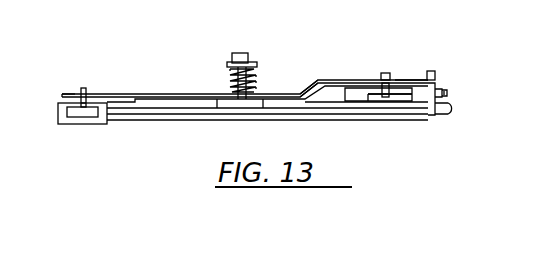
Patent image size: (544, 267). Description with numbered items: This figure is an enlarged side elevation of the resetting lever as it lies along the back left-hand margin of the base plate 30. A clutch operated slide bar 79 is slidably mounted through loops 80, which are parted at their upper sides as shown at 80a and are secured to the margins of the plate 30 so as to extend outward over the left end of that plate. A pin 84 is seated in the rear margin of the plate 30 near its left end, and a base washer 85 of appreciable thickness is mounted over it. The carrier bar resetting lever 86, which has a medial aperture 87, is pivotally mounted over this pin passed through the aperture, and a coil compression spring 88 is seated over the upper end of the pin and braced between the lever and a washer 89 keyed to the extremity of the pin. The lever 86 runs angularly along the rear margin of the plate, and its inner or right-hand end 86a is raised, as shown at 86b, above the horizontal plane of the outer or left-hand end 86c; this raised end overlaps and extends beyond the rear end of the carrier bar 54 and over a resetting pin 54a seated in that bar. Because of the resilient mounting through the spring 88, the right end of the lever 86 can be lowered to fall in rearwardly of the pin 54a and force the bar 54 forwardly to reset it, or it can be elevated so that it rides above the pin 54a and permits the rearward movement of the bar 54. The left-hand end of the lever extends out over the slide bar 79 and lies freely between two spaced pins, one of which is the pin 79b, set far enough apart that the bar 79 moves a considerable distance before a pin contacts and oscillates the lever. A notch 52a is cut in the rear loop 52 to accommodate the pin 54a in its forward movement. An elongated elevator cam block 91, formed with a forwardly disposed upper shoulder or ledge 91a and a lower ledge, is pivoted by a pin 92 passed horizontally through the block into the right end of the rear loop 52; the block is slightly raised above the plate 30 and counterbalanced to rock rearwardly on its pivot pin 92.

The plate 30 is at (189, 115).
The rear loop 52 is at (357, 101).
The notch 52a is at (393, 90).
The carrier bar 54 is at (388, 100).
The resetting pin 54a is at (385, 73).
The slide bar 79 is at (78, 116).
The pin 79b is at (84, 94).
The loops 80 is at (60, 119).
The parted upper side 80a is at (79, 105).
The pin 84 is at (244, 55).
The base washer 85 is at (250, 107).
The carrier bar resetting lever 86 is at (176, 94).
The inner or right-hand end 86a is at (408, 82).
The raised portion 86b is at (304, 82).
The outer or left hand end 86c is at (68, 95).
The medial aperture 87 is at (248, 96).
The coil compression spring 88 is at (230, 82).
The washer 89 is at (228, 66).
The elevator cam block 91 is at (436, 74).
The upper shoulder or ledge 91a is at (432, 71).
The pin 92 is at (448, 94).